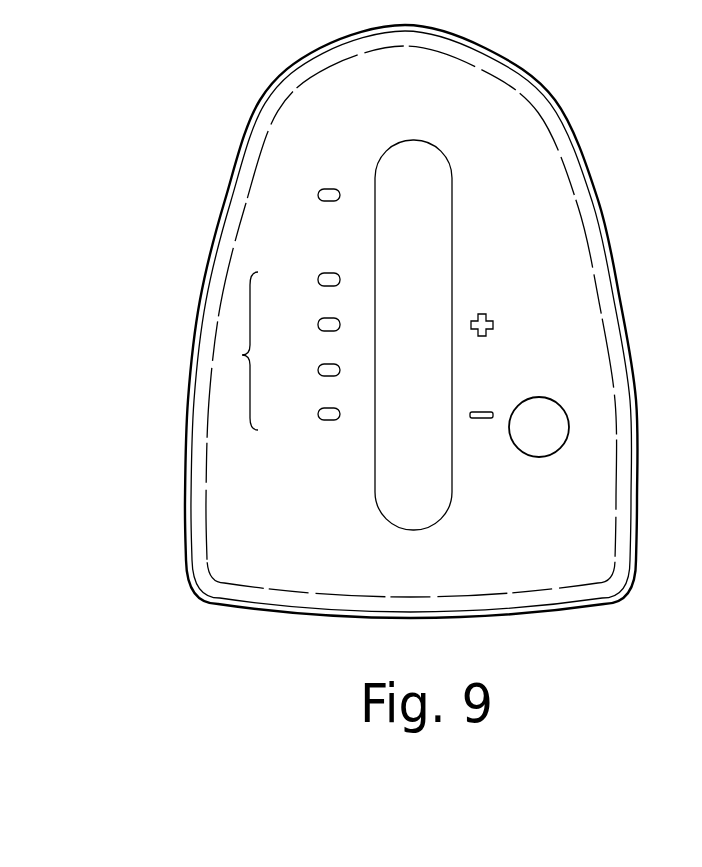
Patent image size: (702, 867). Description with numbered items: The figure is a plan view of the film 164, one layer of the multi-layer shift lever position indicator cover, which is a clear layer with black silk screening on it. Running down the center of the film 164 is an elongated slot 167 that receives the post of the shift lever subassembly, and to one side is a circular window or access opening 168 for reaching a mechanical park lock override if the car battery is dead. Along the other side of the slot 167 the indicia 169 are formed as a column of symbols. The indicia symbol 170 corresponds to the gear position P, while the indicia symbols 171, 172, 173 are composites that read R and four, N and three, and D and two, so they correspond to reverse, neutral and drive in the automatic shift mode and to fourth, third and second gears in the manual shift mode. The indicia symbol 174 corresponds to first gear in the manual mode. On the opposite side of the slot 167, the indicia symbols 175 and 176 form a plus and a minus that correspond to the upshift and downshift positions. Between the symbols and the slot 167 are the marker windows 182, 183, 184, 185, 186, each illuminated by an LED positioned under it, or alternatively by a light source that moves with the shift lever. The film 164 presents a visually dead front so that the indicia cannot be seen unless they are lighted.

The film 164 is at (258, 118).
The slot 167 is at (440, 480).
The circular window or access opening 168 is at (553, 423).
The indicia 169 is at (243, 355).
The indicia symbol 170 is at (296, 180).
The indicia symbol 171 is at (275, 266).
The indicia symbol 172 is at (300, 318).
The indicia symbol 173 is at (298, 362).
The indicia symbol 174 is at (296, 410).
The indicia symbol 175 is at (490, 312).
The indicia symbol 176 is at (490, 410).
The marker window 182 is at (340, 196).
The marker window 183 is at (338, 274).
The marker window 184 is at (340, 324).
The marker window 185 is at (340, 371).
The marker window 186 is at (340, 415).